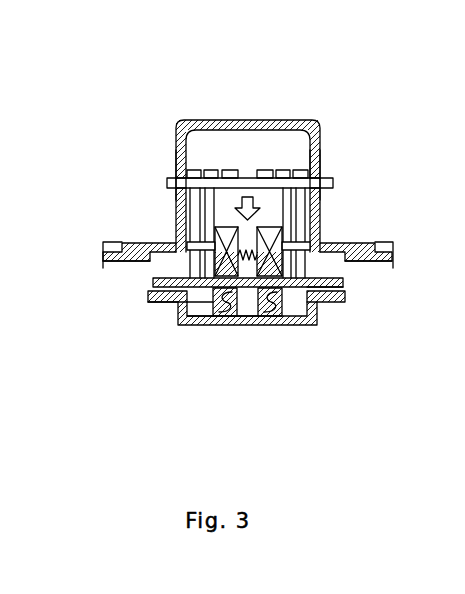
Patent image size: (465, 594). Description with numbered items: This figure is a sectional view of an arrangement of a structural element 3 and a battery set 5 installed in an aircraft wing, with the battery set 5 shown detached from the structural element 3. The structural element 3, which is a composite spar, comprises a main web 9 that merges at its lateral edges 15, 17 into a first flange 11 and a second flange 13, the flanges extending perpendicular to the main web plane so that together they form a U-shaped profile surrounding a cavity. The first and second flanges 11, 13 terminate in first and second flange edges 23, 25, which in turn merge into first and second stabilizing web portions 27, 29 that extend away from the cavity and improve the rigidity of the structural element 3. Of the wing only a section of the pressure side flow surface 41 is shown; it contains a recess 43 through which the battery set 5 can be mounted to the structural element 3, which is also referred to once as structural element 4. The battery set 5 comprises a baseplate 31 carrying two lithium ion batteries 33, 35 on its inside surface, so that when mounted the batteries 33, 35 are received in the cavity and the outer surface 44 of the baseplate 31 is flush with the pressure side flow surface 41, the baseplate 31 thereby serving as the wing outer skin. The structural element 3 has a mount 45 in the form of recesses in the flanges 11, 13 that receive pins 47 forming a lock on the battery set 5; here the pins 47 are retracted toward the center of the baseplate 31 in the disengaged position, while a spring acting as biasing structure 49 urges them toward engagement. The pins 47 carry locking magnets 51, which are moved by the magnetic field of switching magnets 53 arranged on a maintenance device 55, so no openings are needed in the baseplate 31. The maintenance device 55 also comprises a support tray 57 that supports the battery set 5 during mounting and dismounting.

The structural element 3 is at (250, 76).
The structural element 4 is at (458, 178).
The battery set 5 is at (202, 300).
The main web 9 is at (250, 128).
The first flange 11 is at (178, 208).
The second flange 13 is at (320, 198).
The lateral edge 15 is at (178, 120).
The lateral edge 17 is at (319, 120).
The first flange edge 23 is at (175, 242).
The second flange edge 25 is at (322, 237).
The first stabilizing web portion 27 is at (133, 243).
The second stabilizing web portion 29 is at (323, 244).
The baseplate 31 is at (154, 299).
The battery 33 is at (198, 188).
The battery 35 is at (320, 180).
The pressure side flow surface 41 is at (104, 266).
The recess 43 is at (363, 285).
The outer surface 44 is at (160, 303).
The mount 45 is at (178, 224).
The pins 47 is at (148, 283).
The biasing structure 49 is at (247, 326).
The locking magnets 51 is at (232, 215).
The switching magnets 53 is at (206, 326).
The maintenance device 55 is at (317, 323).
The support tray 57 is at (191, 326).